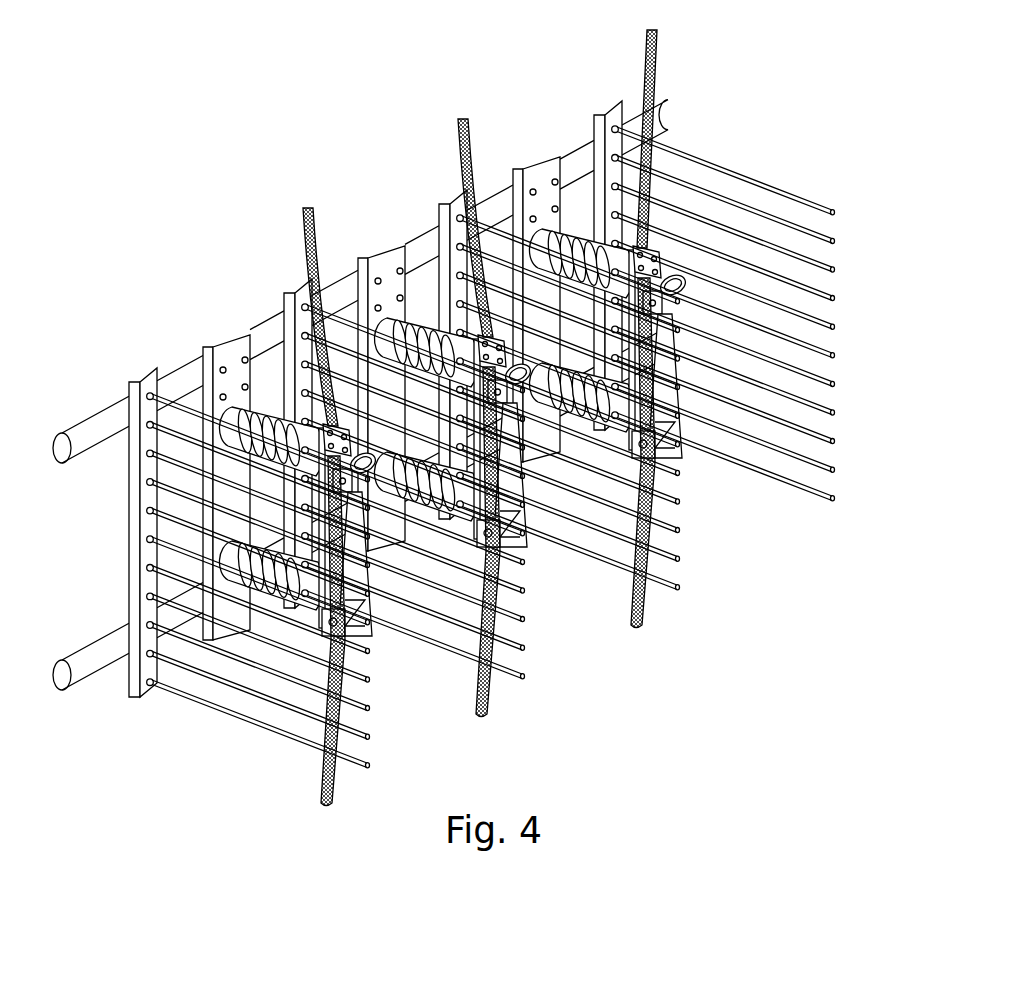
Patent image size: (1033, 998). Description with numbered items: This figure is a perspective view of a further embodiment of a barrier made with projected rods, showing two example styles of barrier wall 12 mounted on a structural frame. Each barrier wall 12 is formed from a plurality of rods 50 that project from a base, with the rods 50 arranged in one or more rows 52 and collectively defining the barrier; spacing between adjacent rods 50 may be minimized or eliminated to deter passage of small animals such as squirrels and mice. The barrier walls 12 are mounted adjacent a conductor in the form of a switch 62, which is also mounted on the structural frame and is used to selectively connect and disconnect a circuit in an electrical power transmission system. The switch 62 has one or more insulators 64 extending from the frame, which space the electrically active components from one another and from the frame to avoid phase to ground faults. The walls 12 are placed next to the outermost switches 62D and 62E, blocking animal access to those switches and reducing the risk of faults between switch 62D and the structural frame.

The barrier wall 12 is at (183, 695).
The rod 50 is at (263, 718).
The row 52 is at (346, 788).
The switch 62 is at (433, 434).
The outermost switch 62D is at (273, 400).
The outermost switch 62E is at (583, 255).
The insulator 64 is at (283, 403).